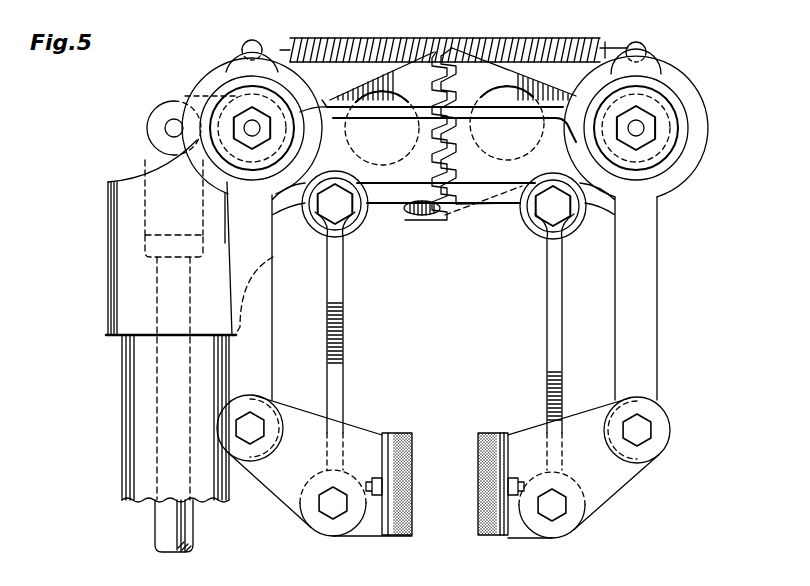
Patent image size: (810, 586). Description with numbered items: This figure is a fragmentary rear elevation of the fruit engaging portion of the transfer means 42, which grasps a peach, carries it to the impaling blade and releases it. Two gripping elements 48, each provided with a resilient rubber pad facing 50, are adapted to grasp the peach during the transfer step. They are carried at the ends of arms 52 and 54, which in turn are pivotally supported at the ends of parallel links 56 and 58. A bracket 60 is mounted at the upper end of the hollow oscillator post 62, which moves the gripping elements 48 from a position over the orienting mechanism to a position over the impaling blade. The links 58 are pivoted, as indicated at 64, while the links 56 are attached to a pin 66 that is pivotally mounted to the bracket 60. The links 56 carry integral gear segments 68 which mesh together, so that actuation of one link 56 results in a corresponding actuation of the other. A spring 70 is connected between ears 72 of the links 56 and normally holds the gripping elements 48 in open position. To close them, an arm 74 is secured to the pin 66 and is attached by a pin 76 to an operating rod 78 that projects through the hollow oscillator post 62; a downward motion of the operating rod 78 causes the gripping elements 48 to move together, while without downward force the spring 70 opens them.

The solenoid actuator assembly 42 is at (137, 356).
The gripping elements 48 is at (398, 431).
The resilient rubber pad facing 50 is at (478, 483).
The arm 52 is at (277, 480).
The arm 54 is at (597, 483).
The links 56 is at (262, 347).
The links 58 is at (341, 347).
The bracket 60 is at (112, 226).
The hollow oscillator post 62 is at (123, 452).
The pivot 64 is at (340, 215).
The pin 66 is at (252, 128).
The gear segments 68 is at (402, 65).
The spring 70 is at (320, 38).
The ears 72 is at (243, 35).
The arm 74 is at (185, 98).
The pin 76 is at (168, 127).
The operating rod 78 is at (163, 520).